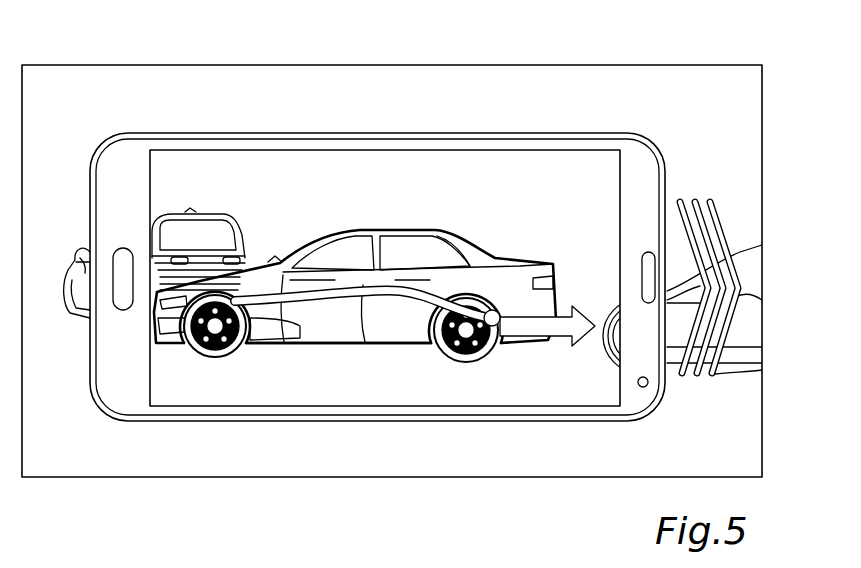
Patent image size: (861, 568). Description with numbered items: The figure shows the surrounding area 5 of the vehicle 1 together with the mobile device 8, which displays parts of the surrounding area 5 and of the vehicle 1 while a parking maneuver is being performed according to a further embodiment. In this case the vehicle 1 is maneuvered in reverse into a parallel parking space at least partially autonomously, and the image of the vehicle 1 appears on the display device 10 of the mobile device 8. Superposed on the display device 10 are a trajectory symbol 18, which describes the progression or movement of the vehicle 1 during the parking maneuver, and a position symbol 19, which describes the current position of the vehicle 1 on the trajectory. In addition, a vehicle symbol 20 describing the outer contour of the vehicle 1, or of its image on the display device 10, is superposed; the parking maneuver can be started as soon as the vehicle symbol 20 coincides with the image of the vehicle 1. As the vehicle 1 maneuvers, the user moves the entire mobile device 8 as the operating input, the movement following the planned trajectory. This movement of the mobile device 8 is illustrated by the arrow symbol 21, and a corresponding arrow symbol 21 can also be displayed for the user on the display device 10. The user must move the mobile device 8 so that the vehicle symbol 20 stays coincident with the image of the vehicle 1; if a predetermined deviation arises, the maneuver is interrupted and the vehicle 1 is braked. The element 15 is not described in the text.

The vehicle 1 is at (341, 276).
The surrounding area 5 is at (677, 133).
The mobile device 8 is at (582, 135).
The display device 10 is at (268, 362).
The direction arrow 15 is at (542, 381).
The trajectory symbol 18 is at (365, 344).
The position symbol 19 is at (492, 327).
The vehicle symbol 20 is at (195, 352).
The arrow symbol 21 is at (742, 258).